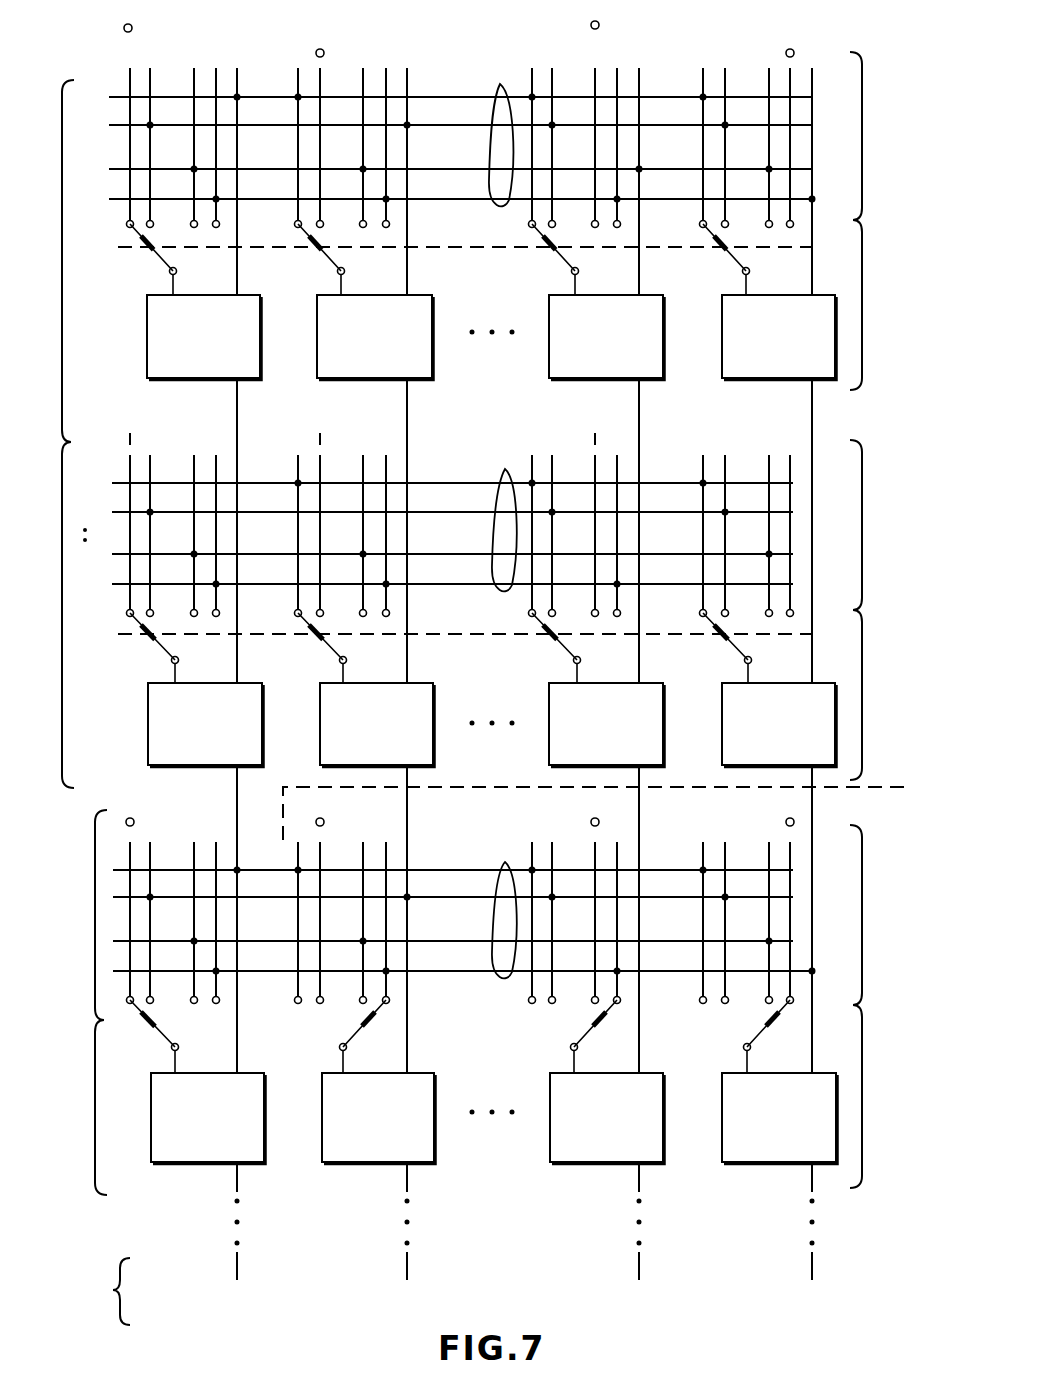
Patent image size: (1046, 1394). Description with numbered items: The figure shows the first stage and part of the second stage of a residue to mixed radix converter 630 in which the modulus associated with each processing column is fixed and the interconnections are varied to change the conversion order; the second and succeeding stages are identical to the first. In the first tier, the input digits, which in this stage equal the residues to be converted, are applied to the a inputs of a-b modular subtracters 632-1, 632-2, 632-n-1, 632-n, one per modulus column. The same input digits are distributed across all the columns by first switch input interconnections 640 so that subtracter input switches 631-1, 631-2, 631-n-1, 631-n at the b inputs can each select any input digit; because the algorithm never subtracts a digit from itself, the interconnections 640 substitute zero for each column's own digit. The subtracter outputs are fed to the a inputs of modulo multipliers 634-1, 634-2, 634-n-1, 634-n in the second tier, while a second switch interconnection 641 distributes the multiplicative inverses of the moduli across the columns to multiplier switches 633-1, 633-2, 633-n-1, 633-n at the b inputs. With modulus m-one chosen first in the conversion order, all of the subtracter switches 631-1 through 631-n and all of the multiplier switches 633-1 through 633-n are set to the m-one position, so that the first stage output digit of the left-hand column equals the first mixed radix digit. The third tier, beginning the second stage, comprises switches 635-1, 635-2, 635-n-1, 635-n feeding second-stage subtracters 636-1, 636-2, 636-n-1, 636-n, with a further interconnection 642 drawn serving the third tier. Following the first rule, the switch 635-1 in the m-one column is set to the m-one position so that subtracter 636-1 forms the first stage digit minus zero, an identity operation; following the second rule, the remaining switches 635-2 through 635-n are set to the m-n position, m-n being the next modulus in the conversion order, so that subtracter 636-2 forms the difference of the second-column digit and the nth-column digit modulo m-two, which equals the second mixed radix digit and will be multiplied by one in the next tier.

The residue to mixed radix converter 630 is at (703, 1258).
The first-column subtracter input switch 631-1 is at (159, 257).
The second-column subtracter input switch 631-2 is at (327, 257).
The (n-1)th-column subtracter input switch 631-n-1 is at (562, 257).
The nth-column subtracter input switch 631-n is at (733, 257).
The first-column a-b modular subtracter 632-1 is at (222, 380).
The second-column a-b modular subtracter 632-2 is at (392, 380).
The (n-1)th-column a-b modular subtracter 632-n-1 is at (638, 380).
The nth-column a-b modular subtracter 632-n is at (792, 380).
The first-column multiplier switch 633-1 is at (161, 645).
The second-column multiplier switch 633-2 is at (329, 645).
The (n-1)th-column multiplier switch 633-n-1 is at (563, 645).
The nth-column multiplier switch 633-n is at (739, 650).
The first-column modulo multiplier 634-1 is at (148, 755).
The second-column modulo multiplier 634-2 is at (320, 755).
The (n-1)th-column modulo multiplier 634-n-1 is at (549, 755).
The nth-column modulo multiplier 634-n is at (722, 755).
The first-column third-tier switch 635-1 is at (161, 1033).
The second-column third-tier switch 635-2 is at (360, 1028).
The (n-1)th-column third-tier switch 635-n-1 is at (592, 1027).
The nth-column third-tier switch 635-n is at (765, 1027).
The first-column second-stage subtracter 636-1 is at (222, 1164).
The second-column second-stage subtracter 636-2 is at (393, 1164).
The (n-1)th-column second-stage subtracter 636-n-1 is at (641, 1164).
The nth-column second-stage subtracter 636-n is at (795, 1164).
The first switch input interconnections 640 is at (500, 86).
The second switch interconnection 641 is at (505, 471).
The tier 3 bus break 642 is at (505, 862).